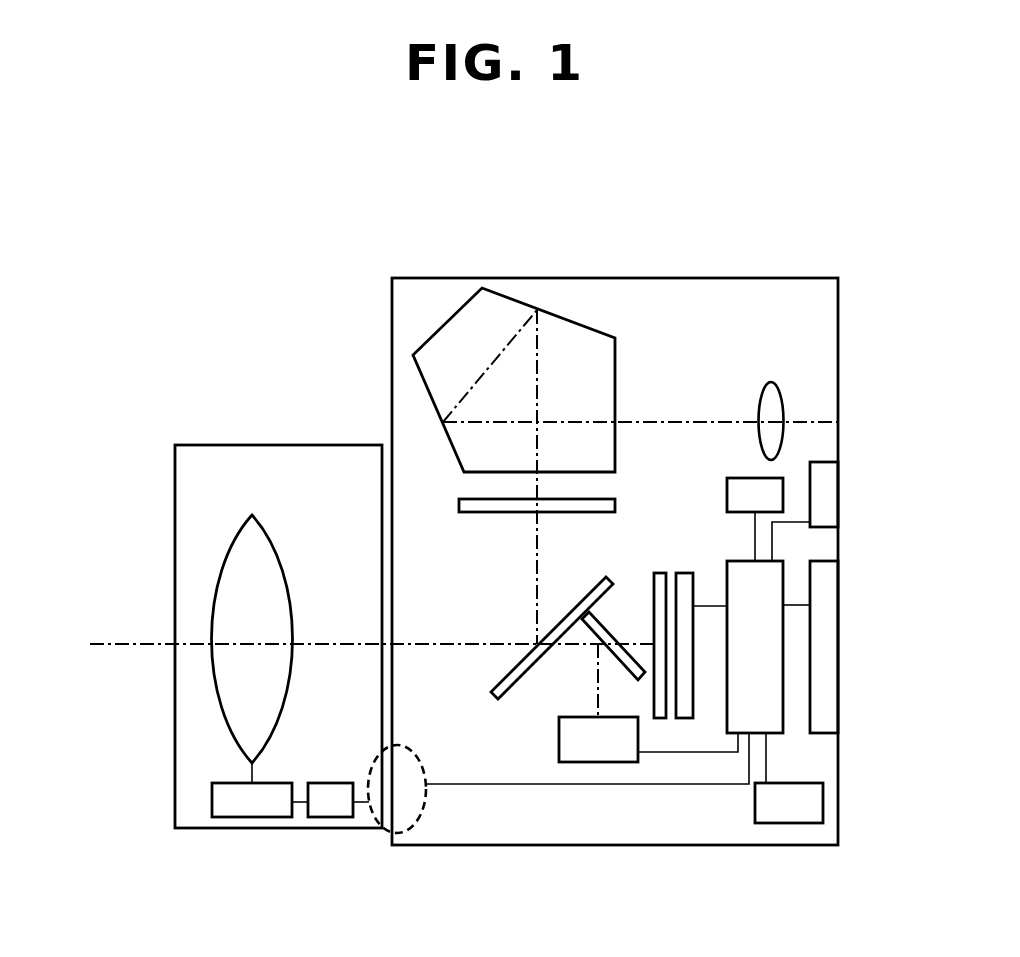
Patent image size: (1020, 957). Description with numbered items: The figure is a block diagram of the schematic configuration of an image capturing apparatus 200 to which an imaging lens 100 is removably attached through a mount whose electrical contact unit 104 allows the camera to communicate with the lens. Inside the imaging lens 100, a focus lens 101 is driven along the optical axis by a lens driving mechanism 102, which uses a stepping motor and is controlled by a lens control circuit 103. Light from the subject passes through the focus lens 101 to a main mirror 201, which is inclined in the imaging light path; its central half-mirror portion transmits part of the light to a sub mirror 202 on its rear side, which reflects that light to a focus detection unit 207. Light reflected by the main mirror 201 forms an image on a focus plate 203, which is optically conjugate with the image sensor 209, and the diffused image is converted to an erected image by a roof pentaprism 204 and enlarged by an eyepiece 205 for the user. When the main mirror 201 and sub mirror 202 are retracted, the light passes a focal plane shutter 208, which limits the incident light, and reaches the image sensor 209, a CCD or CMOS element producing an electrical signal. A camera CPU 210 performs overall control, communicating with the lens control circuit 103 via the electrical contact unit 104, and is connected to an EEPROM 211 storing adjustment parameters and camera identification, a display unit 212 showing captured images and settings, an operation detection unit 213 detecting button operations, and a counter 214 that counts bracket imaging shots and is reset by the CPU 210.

The imaging lens 100 is at (203, 443).
The focus lens 101 is at (252, 513).
The lens driving mechanism 102 is at (227, 818).
The lens control circuit 103 is at (330, 818).
The electrical contact unit 104 is at (413, 847).
The image capturing apparatus 200 is at (692, 277).
The main mirror 201 is at (496, 696).
The sub mirror 202 is at (587, 641).
The focus plate 203 is at (475, 513).
The roof pentaprism 204 is at (597, 327).
The eyepiece 205 is at (783, 395).
The focus detection unit 207 is at (583, 763).
The focal plane shutter 208 is at (659, 572).
The image sensor 209 is at (687, 572).
The camera CPU 210 is at (770, 733).
The EEPROM 211 is at (823, 807).
The display unit 212 is at (828, 655).
The operation detection unit 213 is at (828, 493).
The counter 214 is at (781, 478).